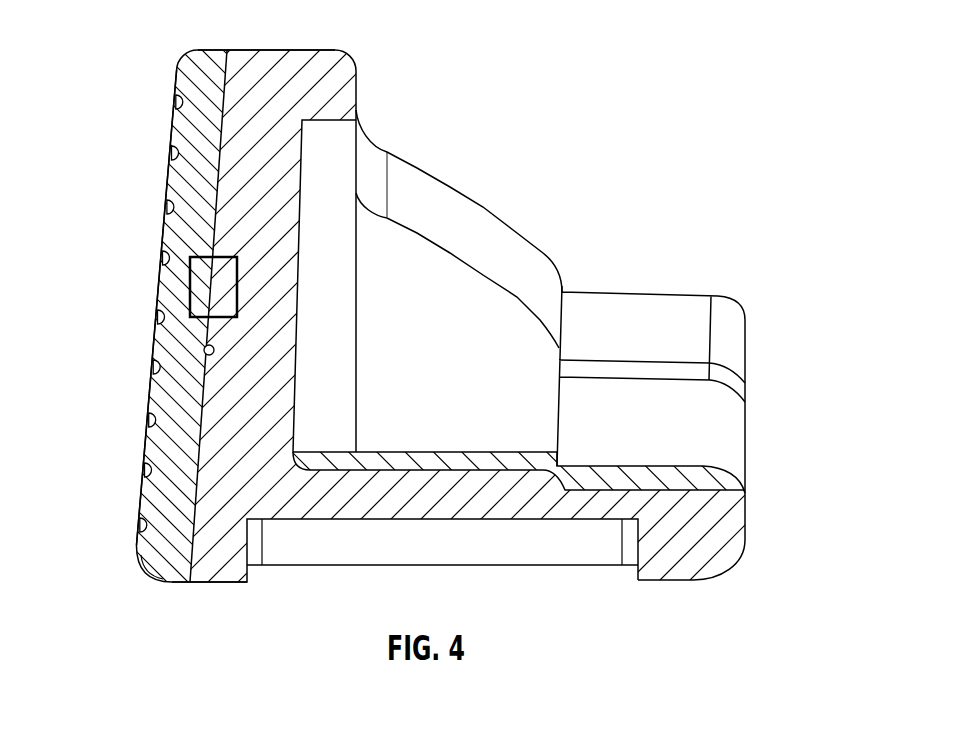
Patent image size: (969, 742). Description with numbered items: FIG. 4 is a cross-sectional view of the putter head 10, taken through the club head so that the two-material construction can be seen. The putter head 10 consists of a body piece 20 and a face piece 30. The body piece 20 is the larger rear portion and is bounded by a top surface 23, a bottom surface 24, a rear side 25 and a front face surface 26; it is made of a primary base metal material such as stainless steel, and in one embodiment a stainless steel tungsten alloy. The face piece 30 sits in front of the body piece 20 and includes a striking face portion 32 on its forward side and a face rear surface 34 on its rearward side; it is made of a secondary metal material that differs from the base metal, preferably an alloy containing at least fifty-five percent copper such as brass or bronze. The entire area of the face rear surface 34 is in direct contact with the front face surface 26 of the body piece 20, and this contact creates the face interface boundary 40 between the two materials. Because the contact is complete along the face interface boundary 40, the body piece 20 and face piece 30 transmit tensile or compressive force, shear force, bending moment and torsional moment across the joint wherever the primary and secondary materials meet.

The putter head 10 is at (240, 270).
The body piece 20 is at (358, 95).
The top surface 23 is at (303, 50).
The bottom surface 24 is at (227, 583).
The rear side 25 is at (746, 516).
The front face surface 26 is at (220, 183).
The face piece 30 is at (170, 121).
The striking face portion 32 is at (160, 240).
The face rear surface 34 is at (203, 354).
The face interface boundary 40 is at (222, 100).